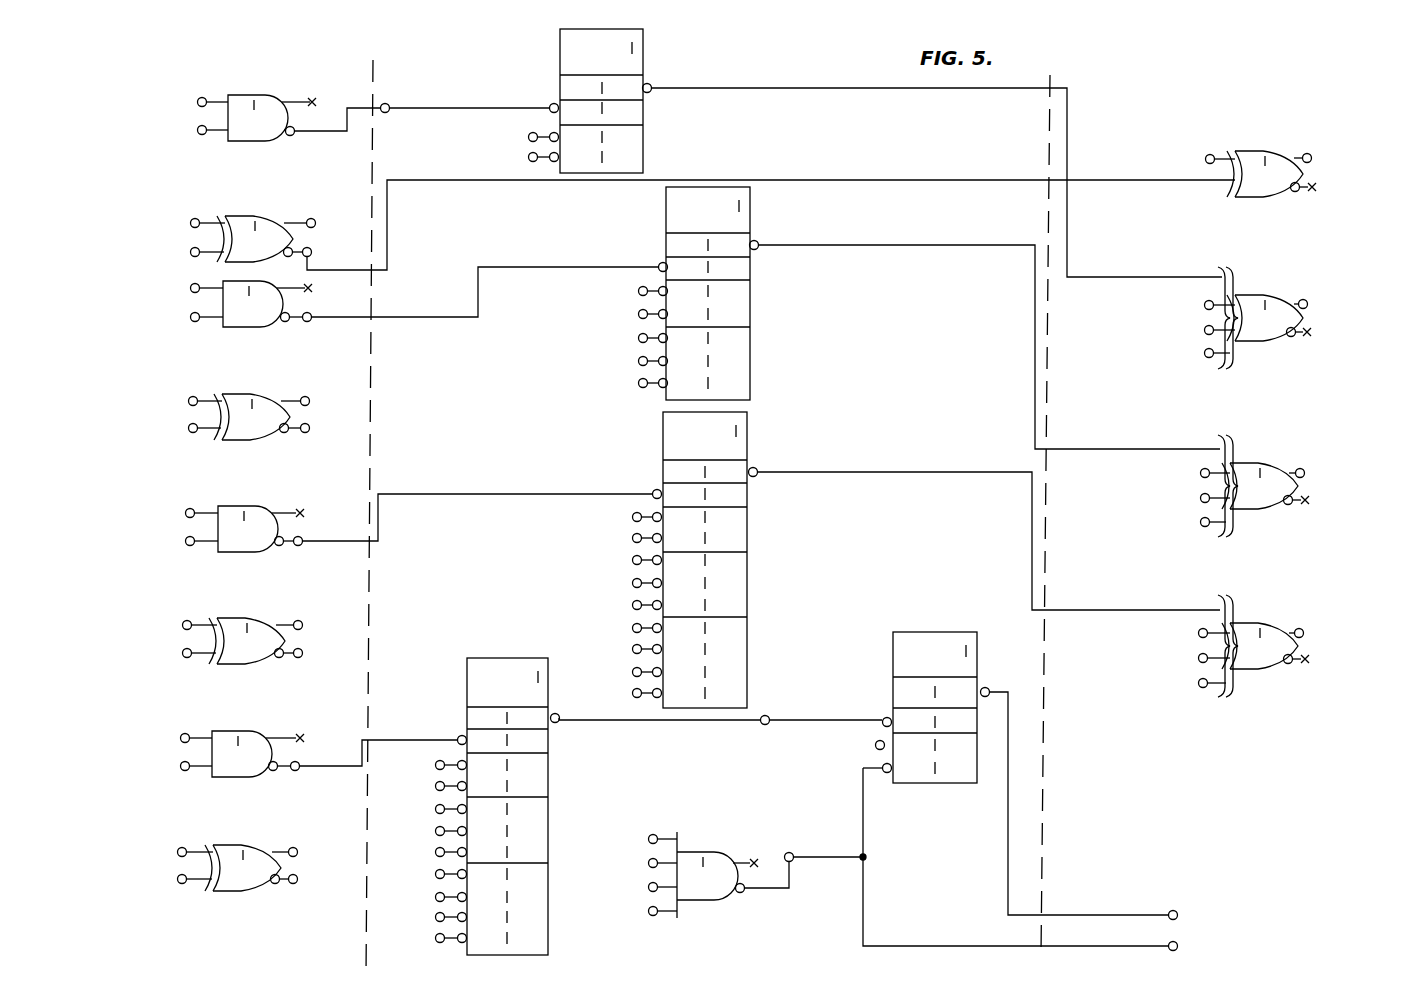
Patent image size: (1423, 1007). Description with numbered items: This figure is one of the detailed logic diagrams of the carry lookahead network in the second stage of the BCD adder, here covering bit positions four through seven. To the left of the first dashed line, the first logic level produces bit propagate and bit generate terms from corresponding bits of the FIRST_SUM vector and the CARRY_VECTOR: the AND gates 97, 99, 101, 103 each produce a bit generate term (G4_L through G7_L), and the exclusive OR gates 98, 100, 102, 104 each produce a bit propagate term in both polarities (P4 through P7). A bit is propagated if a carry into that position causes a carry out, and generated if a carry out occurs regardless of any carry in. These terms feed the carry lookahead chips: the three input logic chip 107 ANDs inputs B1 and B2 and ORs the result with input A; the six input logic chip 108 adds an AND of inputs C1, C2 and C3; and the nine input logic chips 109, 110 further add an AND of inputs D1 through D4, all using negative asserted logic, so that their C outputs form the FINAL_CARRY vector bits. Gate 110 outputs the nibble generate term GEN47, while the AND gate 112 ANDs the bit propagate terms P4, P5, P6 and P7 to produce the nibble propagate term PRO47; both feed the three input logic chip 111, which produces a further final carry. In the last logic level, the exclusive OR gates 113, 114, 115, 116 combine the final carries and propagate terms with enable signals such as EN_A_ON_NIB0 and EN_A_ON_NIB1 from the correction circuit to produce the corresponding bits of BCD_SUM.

The AND gate L200 97 is at (236, 95).
The exclusive-OR gate L201 98 is at (248, 213).
The AND gate L202 99 is at (250, 327).
The exclusive-OR gate L203 100 is at (262, 390).
The AND gate L204 101 is at (250, 505).
The exclusive-OR gate L205 102 is at (238, 617).
The AND gate L206 103 is at (232, 728).
The exclusive-OR gate L207 104 is at (242, 843).
The three input logic chip 107 is at (560, 70).
The six input logic chip 108 is at (666, 228).
The nine input logic chip 109 is at (747, 442).
The nine input logic chip 110 is at (467, 676).
The three input logic chip 111 is at (893, 662).
The AND gate 112 is at (712, 850).
The exclusive-OR gate L222 113 is at (1255, 150).
The exclusive OR gate 114 is at (1262, 293).
The exclusive-OR gate L224 115 is at (1255, 462).
The exclusive OR gate 116 is at (1262, 668).